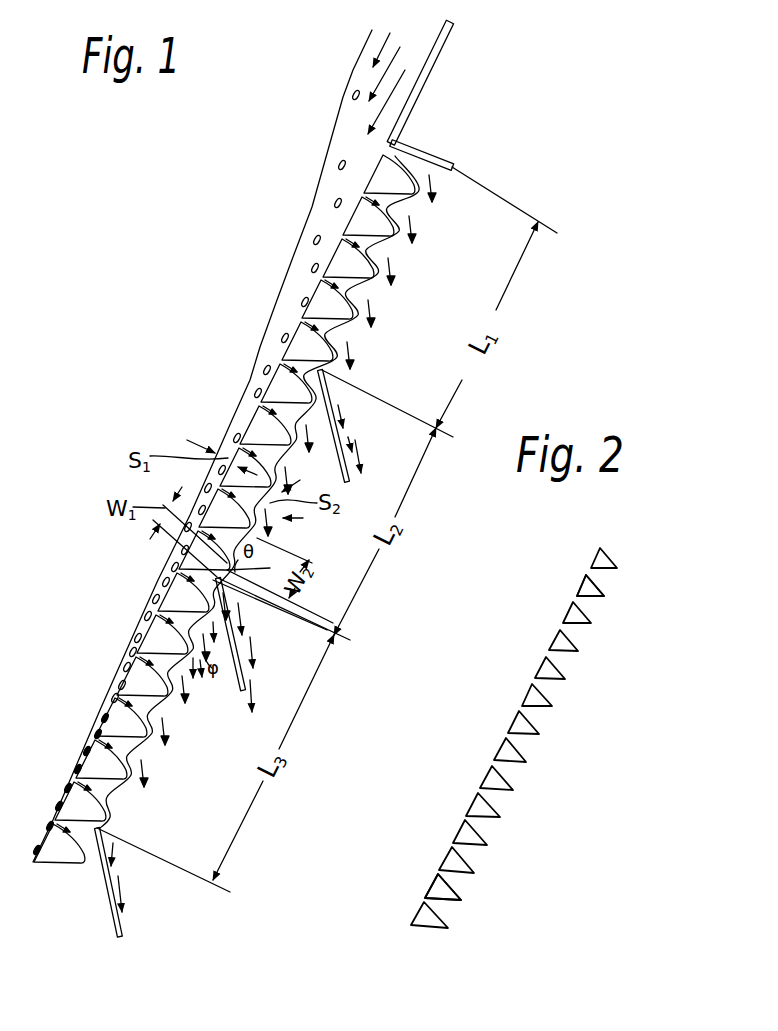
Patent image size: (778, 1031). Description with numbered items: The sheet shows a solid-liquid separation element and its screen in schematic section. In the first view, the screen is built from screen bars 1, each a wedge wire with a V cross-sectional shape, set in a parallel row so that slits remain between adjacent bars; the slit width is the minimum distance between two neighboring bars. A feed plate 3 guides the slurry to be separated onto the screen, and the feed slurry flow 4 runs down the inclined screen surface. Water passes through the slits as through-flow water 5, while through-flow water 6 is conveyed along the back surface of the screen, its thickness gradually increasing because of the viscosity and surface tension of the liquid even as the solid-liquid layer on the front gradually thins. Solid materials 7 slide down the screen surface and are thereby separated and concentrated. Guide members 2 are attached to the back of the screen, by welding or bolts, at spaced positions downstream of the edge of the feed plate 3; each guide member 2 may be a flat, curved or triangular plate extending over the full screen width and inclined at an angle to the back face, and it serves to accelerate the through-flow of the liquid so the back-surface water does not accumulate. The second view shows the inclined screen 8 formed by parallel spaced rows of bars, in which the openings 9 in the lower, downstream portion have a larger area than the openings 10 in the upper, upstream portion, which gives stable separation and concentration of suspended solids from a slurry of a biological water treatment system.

In FIG. 1, the screen bar 1 is at (195, 555).
In FIG. 1, the guide member 2 is at (237, 677).
In FIG. 1, the feed plate 3 is at (424, 94).
In FIG. 1, the feed slurry flow 4 is at (381, 80).
In FIG. 1, the through-flow water 5 is at (258, 403).
In FIG. 1, the through-flow water conveyed along the back surface 6 is at (357, 303).
In FIG. 1, the solid materials 7 is at (137, 638).
In FIG. 2, the screen 8 is at (597, 548).
In FIG. 2, the openings in the lower portion 9 is at (447, 872).
In FIG. 2, the openings in the upper portion 10 is at (598, 575).